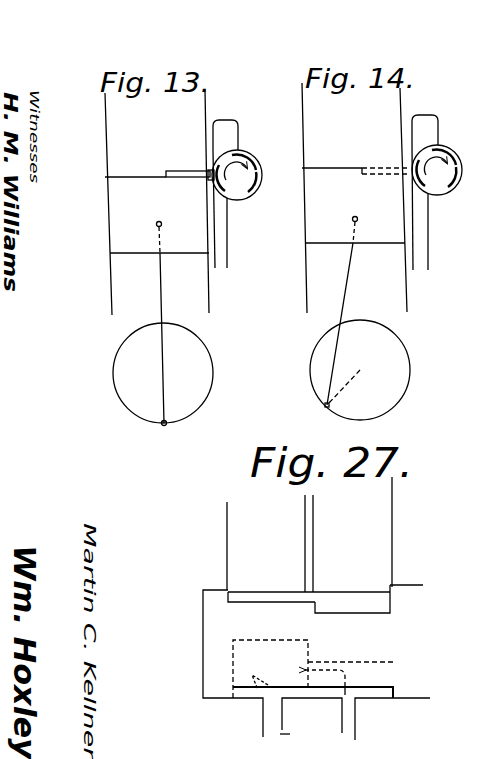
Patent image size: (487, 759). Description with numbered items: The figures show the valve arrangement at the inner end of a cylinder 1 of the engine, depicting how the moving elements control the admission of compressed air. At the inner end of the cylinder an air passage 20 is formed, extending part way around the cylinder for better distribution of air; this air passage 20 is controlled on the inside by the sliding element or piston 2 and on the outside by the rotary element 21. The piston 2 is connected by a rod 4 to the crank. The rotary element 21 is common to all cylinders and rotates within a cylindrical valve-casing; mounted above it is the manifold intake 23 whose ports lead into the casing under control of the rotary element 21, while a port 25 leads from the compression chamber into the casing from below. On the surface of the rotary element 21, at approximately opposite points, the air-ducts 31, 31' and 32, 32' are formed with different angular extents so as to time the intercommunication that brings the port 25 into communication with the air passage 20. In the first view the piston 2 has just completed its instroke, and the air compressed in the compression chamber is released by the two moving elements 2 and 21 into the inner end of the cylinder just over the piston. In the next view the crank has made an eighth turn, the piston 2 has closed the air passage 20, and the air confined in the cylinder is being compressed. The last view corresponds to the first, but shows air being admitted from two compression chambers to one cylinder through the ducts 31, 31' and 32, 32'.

In FIG. 13, the frame member 1 is at (198, 110).
In FIG. 14, the frame member 1 is at (375, 200).
In FIG. 27, the frame member 1 is at (238, 527).
In FIG. 13, the sliding element or piston 2 is at (118, 233).
In FIG. 14, the sliding element or piston 2 is at (353, 198).
In FIG. 13, the rod with ball 4 is at (162, 298).
In FIG. 14, the rod with ball 4 is at (345, 297).
In FIG. 13, the air passage 20 is at (208, 169).
In FIG. 14, the air passage 20 is at (386, 171).
In FIG. 13, the rotary element 21 is at (253, 193).
In FIG. 14, the rotary element 21 is at (443, 183).
In FIG. 27, the rotary element 21 is at (214, 638).
In FIG. 13, the manifold intake 23 is at (233, 123).
In FIG. 14, the manifold intake 23 is at (433, 120).
In FIG. 27, the port 25 is at (345, 728).
In FIG. 13, the air-duct 31 is at (255, 153).
In FIG. 27, the air-duct 31 is at (309, 582).
In FIG. 13, the air-duct 31' is at (268, 181).
In FIG. 27, the air-duct 31' is at (352, 587).
In FIG. 13, the air-duct 32 is at (195, 187).
In FIG. 27, the air-duct 32 is at (304, 692).
In FIG. 13, the air-duct 32' is at (242, 233).
In FIG. 27, the air-duct 32' is at (315, 709).